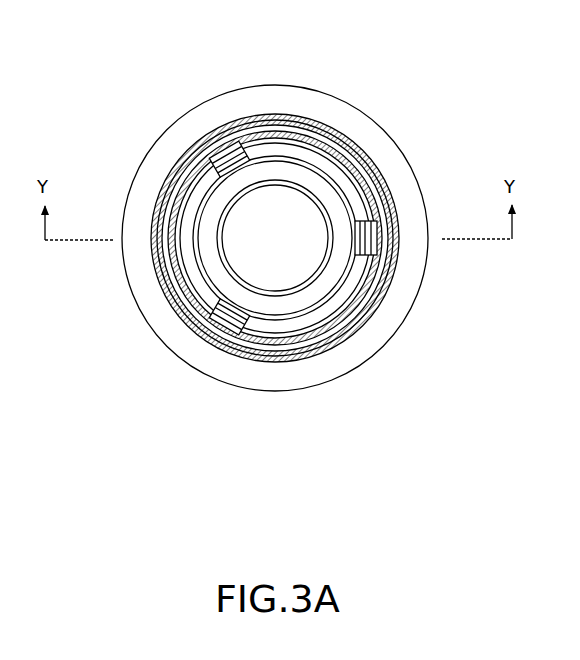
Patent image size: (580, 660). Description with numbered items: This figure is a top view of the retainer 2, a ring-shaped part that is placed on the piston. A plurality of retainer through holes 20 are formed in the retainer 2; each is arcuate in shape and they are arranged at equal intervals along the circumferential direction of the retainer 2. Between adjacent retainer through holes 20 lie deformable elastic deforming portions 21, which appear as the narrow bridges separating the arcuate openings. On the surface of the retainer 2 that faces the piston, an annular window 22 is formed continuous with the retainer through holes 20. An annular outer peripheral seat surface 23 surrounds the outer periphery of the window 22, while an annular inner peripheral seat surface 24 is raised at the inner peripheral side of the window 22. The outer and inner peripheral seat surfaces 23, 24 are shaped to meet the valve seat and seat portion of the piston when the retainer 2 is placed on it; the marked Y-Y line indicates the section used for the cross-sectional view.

The retainer 2 is at (427, 143).
The retainer through holes 20 is at (253, 260).
The elastic deforming portions 21 is at (227, 160).
The window 22 is at (265, 360).
The outer peripheral seat surface 23 is at (297, 350).
The inner peripheral seat surface 24 is at (219, 276).